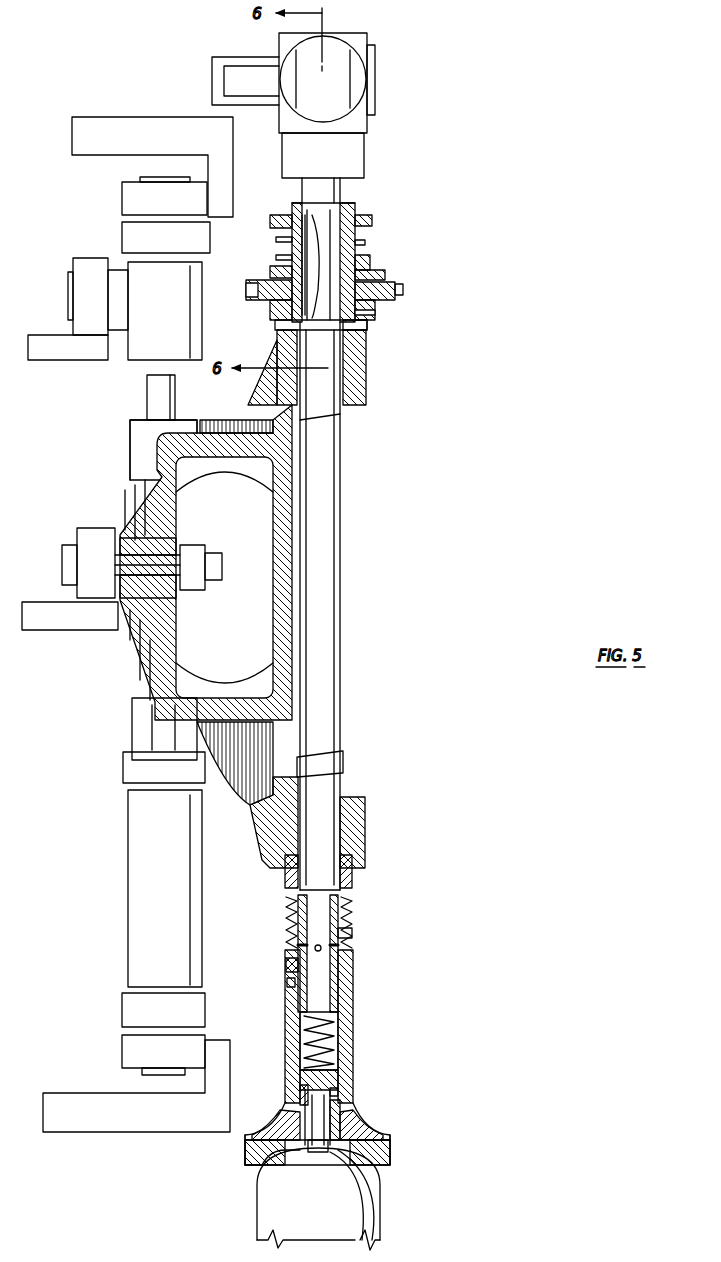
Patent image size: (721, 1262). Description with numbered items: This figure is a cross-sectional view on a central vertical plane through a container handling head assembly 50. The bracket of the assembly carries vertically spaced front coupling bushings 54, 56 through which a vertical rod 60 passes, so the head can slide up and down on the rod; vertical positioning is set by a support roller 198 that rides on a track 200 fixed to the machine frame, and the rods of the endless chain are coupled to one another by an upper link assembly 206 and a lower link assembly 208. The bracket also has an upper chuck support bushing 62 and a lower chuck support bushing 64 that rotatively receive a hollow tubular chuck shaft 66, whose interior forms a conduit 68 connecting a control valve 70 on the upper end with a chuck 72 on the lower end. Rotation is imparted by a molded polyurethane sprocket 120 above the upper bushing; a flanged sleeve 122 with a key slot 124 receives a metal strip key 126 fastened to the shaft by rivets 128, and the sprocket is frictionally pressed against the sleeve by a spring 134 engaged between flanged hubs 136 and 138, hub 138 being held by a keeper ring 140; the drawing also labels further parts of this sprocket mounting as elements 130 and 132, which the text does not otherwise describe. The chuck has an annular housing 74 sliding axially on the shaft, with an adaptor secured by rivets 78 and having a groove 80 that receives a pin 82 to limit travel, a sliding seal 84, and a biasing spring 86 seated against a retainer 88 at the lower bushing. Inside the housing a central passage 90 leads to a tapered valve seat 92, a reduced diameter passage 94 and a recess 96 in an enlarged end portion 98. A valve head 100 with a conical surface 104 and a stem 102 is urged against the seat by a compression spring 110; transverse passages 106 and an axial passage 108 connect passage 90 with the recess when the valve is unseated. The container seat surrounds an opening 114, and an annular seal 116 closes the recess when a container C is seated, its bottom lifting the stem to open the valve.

The head assembly 50 is at (354, 673).
The front coupling bushing 54 is at (130, 438).
The front coupling bushing 56 is at (135, 742).
The vertical rod 60 is at (150, 385).
The upper chuck support bushing 62 is at (366, 381).
The lower chuck support bushing 64 is at (358, 815).
The chuck shaft 66 is at (330, 733).
The conduit 68 is at (332, 760).
The control valve 70 is at (396, 90).
The chuck 72 is at (320, 1042).
The annular housing 74 is at (353, 1065).
The rivet 78 is at (315, 948).
The axially extending groove 80 is at (286, 965).
The pin 82 is at (287, 983).
The sliding seal 84 is at (352, 937).
The biasing spring 86 is at (287, 913).
The retainer 88 is at (352, 870).
The central passage 90 is at (298, 1030).
The valve seat 92 is at (338, 1092).
The reduced diameter passage 94 is at (340, 1106).
The recess 96 is at (366, 1128).
The enlarged diameter end portion 98 is at (375, 1132).
The valve head 100 is at (300, 1075).
The valve stem 102 is at (280, 1130).
The conical surface 104 is at (300, 1086).
The transverse passage 106 is at (305, 1108).
The axial passage 108 is at (316, 1152).
The compression spring 110 is at (338, 1033).
The opening 114 is at (262, 1172).
The annular seal 116 is at (366, 1170).
The sprocket 120 is at (403, 290).
The flanged sleeve 122 is at (368, 326).
The key slot 124 is at (300, 212).
The key 126 is at (270, 298).
The rivet 128 is at (270, 229).
The bearing race 130 is at (375, 318).
The collar 132 is at (385, 275).
The spring 134 is at (367, 243).
The flanged hub 136 is at (276, 259).
The flanged hub 138 is at (373, 220).
The keeper ring 140 is at (355, 215).
The support roller 198 is at (95, 530).
The track 200 is at (56, 622).
The upper link assembly 206 is at (137, 282).
The lower link assembly 208 is at (135, 905).
The container C is at (262, 1198).